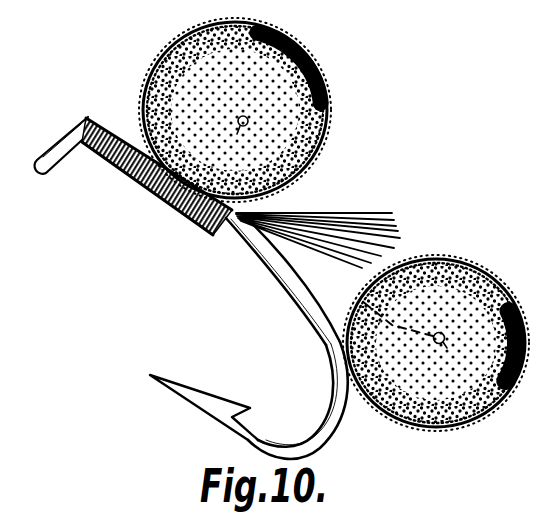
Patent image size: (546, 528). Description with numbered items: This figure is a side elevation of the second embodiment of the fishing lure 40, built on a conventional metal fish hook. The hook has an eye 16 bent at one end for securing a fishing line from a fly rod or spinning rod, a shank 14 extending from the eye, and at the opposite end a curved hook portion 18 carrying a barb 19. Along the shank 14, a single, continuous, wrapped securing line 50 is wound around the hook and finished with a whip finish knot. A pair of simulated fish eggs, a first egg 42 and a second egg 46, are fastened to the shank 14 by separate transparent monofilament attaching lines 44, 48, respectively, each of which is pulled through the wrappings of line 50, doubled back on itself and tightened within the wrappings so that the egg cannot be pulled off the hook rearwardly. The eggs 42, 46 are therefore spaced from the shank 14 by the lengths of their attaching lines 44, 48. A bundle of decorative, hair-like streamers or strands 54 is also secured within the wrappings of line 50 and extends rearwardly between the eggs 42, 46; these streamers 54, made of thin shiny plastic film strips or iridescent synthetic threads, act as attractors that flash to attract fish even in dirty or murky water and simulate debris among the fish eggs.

The shank 14 is at (251, 239).
The eye 16 is at (52, 166).
The curved hook portion 18 is at (306, 438).
The barb 19 is at (205, 401).
The second embodiment of the fishing lure 40 is at (410, 95).
The first simulated fish egg 42 is at (306, 107).
The attaching line 44 is at (236, 137).
The second simulated fish egg 46 is at (473, 262).
The attaching line 48 is at (392, 327).
The wrapped securing line 50 is at (134, 180).
The hair-like streamers 54 is at (372, 228).